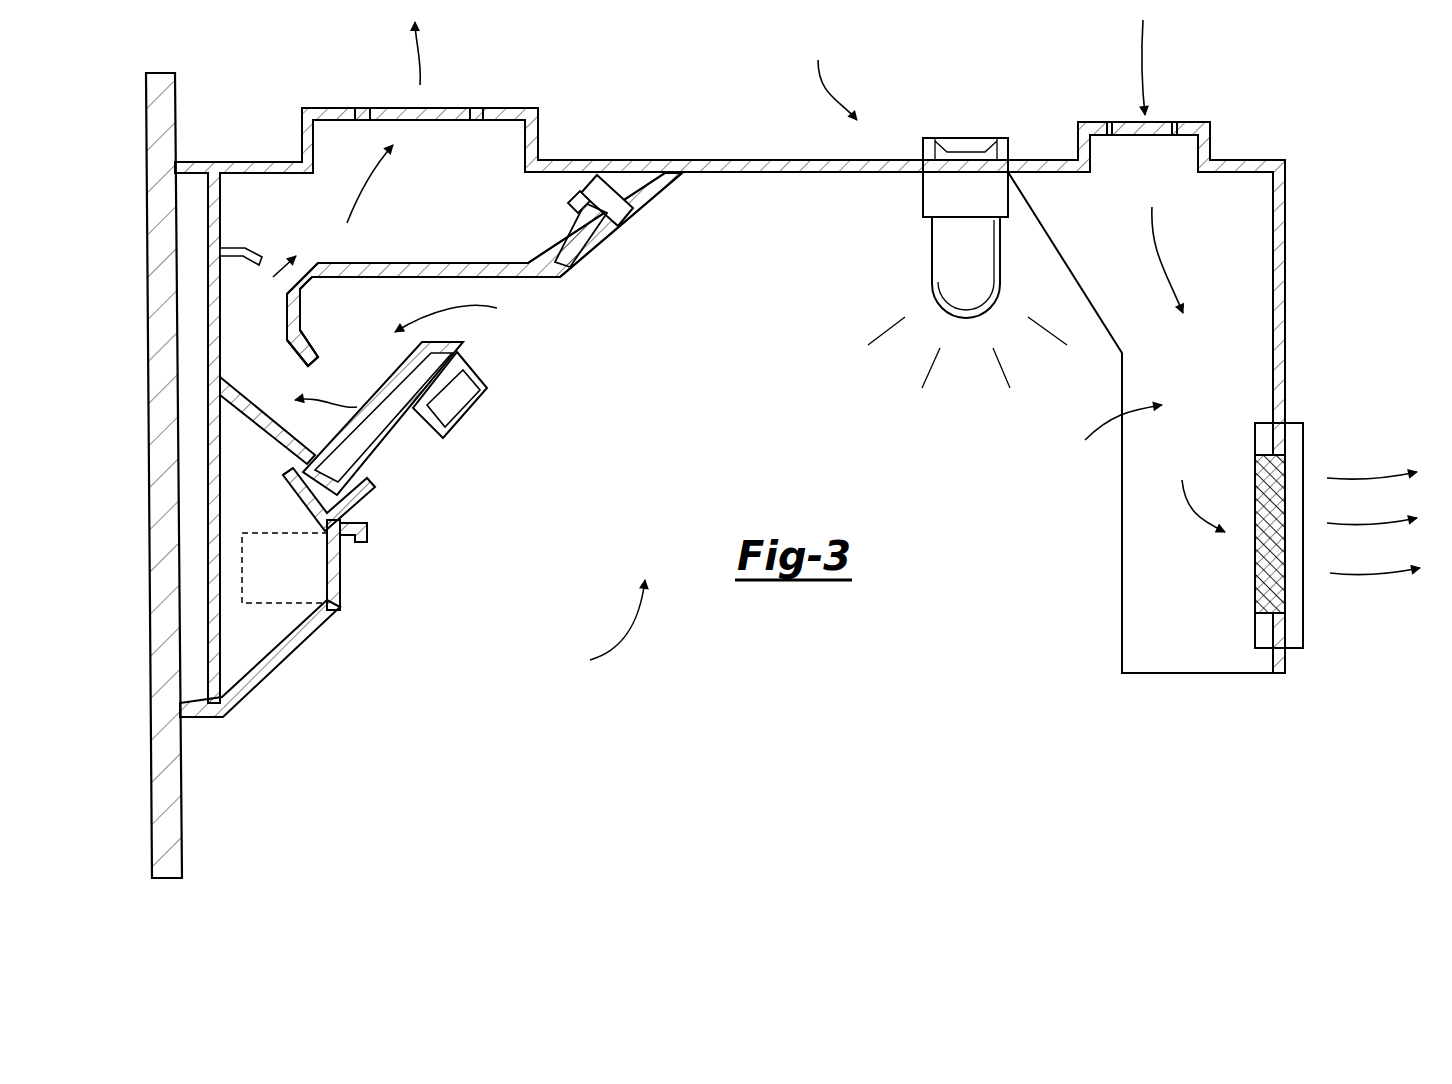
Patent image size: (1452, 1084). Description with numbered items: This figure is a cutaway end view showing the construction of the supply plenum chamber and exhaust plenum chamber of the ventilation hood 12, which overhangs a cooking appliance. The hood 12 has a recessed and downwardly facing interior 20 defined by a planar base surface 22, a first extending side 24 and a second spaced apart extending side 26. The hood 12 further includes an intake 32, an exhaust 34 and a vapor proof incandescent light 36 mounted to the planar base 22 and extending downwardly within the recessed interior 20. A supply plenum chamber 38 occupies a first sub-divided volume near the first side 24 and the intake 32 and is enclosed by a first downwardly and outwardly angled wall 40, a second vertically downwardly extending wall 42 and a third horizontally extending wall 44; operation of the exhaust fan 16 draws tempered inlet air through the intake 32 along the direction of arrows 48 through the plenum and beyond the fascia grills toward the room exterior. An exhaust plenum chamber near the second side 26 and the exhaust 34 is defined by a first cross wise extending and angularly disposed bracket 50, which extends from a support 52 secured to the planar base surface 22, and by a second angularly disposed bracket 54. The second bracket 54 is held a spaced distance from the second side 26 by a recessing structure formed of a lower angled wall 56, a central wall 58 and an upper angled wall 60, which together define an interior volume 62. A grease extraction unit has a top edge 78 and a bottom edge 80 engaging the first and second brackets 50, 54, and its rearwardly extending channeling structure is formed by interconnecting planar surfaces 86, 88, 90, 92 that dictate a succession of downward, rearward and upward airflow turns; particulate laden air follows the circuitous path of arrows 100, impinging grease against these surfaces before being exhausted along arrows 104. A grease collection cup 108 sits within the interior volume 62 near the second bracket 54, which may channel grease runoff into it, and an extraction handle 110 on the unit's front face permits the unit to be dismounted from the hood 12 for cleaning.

The ventilation hood 12 is at (833, 76).
The exhaust fan 16 is at (1322, 597).
The recessed interior 20 is at (603, 628).
The planar base surface 22 is at (742, 158).
The first extending side 24 is at (1286, 332).
The second extending side 26 is at (218, 207).
The intake 32 is at (1165, 130).
The exhaust 34 is at (442, 113).
The incandescent light 36 is at (930, 234).
The supply plenum chamber 38 is at (1108, 434).
The first downwardly and outwardly angled wall 40 is at (1076, 280).
The second vertically downwardly extending wall 42 is at (1122, 638).
The third horizontally extending wall 44 is at (1234, 673).
The airflow arrows 48 is at (1173, 247).
The first angularly disposed bracket 50 is at (593, 190).
The support 52 is at (662, 195).
The second angularly disposed bracket 54 is at (373, 490).
The lower angled wall 56 is at (287, 660).
The central wall 58 is at (342, 567).
The upper angled wall 60 is at (245, 390).
The interior volume 62 is at (232, 643).
The top edge 78 is at (590, 210).
The bottom edge 80 is at (315, 487).
The interconnecting planar surface 86 is at (375, 263).
The interconnecting planar surface 88 is at (302, 293).
The interconnecting planar surface 90 is at (287, 320).
The interconnecting planar surface 92 is at (300, 352).
The directional arrows 100 is at (460, 307).
The exhaust airflow arrows 104 is at (412, 172).
The grease collection cup 108 is at (308, 590).
The extraction handle 110 is at (460, 428).